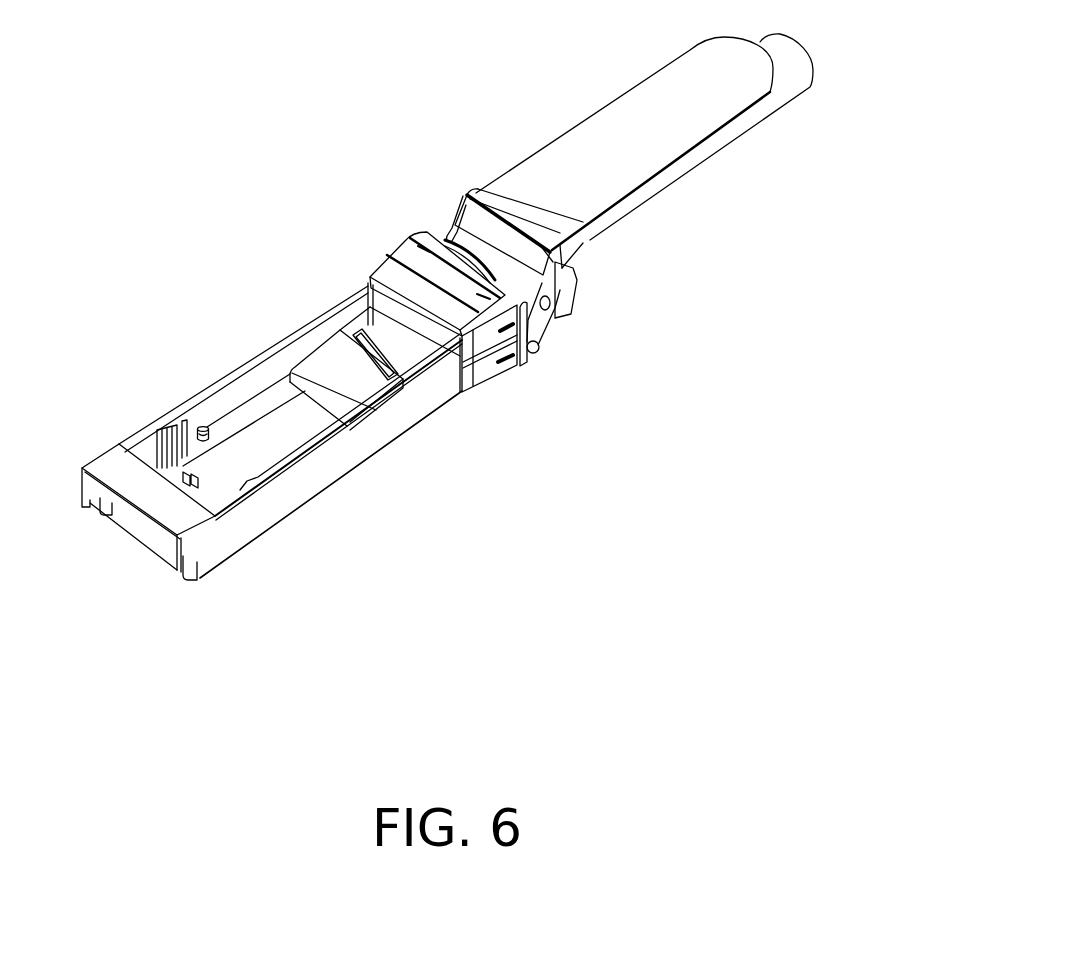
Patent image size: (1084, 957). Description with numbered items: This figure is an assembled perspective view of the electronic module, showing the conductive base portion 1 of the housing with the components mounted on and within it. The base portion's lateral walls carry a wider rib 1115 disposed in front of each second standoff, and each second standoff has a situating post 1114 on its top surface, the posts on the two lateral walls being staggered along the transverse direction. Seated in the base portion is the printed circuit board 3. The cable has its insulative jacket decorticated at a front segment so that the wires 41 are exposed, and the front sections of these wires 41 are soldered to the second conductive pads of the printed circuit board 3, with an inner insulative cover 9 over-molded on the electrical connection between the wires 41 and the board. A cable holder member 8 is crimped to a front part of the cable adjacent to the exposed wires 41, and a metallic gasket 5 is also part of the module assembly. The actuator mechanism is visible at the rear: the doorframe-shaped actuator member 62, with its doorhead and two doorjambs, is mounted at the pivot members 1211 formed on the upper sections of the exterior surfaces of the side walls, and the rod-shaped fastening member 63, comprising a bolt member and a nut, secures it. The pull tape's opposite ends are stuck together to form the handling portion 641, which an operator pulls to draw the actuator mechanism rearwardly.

The conductive base portion 1 is at (297, 493).
The printed circuit board 3 is at (293, 433).
The inner insulative cover 9 is at (333, 345).
The wires 41 is at (427, 347).
The metallic gasket 5 is at (407, 258).
The cable holder member 8 is at (495, 243).
The handling portion 641 is at (587, 143).
The actuator member 62 is at (578, 269).
The fastening member 63 is at (537, 353).
The pivot members 1211 is at (556, 328).
The situating post 1114 is at (204, 427).
The wider rib 1115 is at (180, 440).